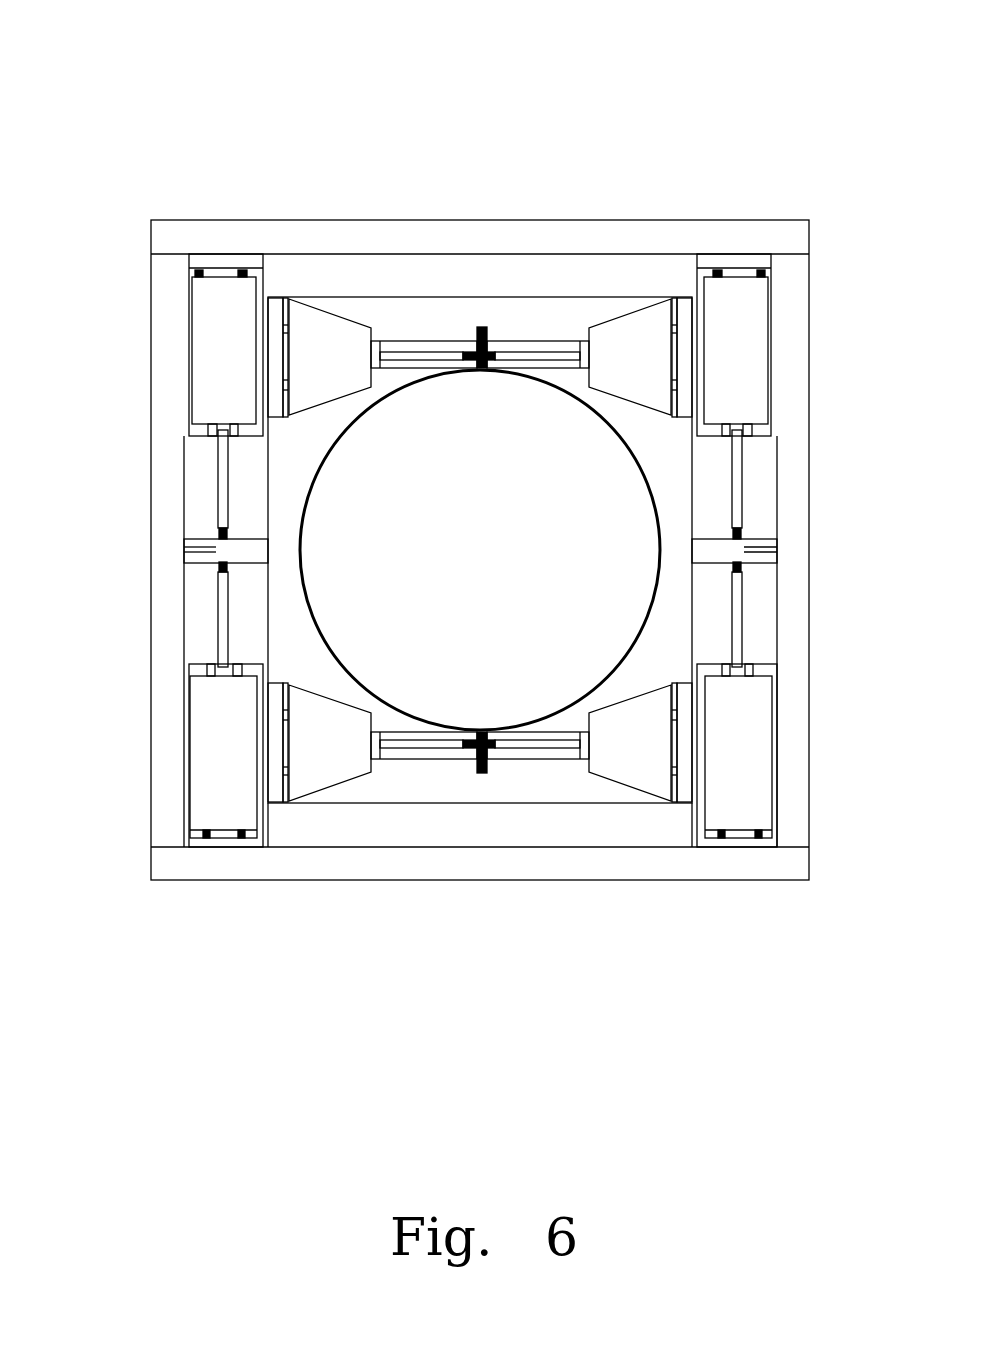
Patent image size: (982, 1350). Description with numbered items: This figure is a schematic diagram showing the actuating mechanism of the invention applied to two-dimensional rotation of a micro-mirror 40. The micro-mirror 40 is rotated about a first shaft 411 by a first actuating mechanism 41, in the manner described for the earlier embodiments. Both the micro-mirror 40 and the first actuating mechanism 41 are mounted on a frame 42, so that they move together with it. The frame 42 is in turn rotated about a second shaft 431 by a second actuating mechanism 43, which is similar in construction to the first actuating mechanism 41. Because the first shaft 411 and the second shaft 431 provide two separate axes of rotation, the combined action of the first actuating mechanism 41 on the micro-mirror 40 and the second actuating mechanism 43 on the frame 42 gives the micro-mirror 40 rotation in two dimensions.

The micro-mirror 40 is at (535, 632).
The first actuating mechanism 41 is at (333, 347).
The first shaft 411 is at (478, 328).
The frame 42 is at (670, 465).
The second actuating mechanism 43 is at (215, 347).
The second shaft 431 is at (242, 553).